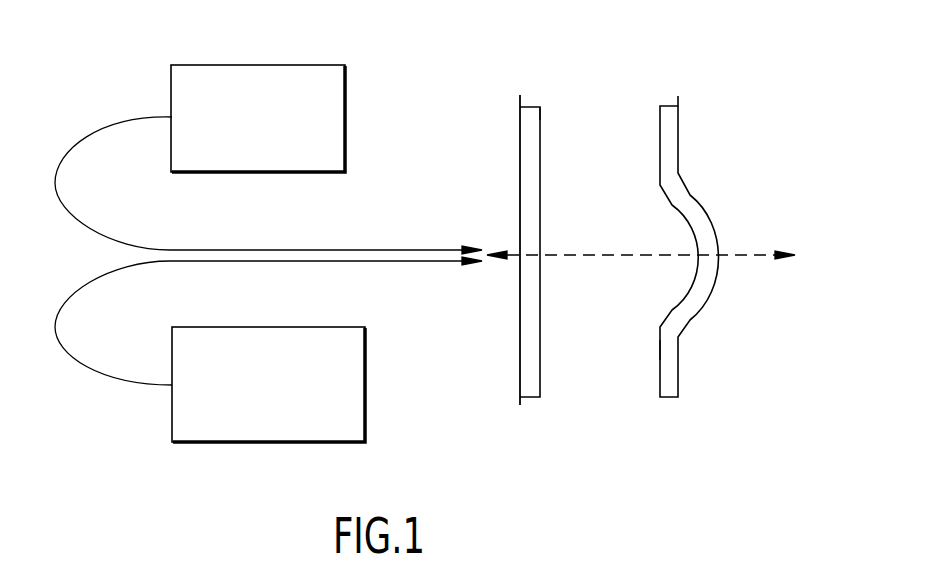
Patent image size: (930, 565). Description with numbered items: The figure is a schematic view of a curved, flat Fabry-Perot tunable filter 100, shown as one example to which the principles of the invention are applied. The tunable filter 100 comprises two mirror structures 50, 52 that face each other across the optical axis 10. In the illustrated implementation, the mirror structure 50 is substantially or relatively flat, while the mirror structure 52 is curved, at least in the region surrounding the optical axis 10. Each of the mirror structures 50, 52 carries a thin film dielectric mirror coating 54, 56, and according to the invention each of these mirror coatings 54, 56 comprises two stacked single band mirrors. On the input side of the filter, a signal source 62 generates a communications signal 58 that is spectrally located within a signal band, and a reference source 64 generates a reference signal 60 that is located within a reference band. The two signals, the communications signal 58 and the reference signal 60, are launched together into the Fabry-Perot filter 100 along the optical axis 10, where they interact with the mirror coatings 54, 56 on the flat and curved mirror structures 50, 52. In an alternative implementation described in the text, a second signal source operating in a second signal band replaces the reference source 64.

The optical axis 10 is at (753, 258).
The mirror structure 50 is at (520, 387).
The mirror structure 52 is at (678, 400).
The thin film dielectric mirror coating 54 is at (540, 120).
The thin film dielectric mirror coating 56 is at (660, 352).
The communications signal 58 is at (400, 250).
The reference signal 60 is at (412, 262).
The signal source 62 is at (172, 82).
The reference source 64 is at (172, 402).
The Fabry-Perot tunable filter 100 is at (710, 80).